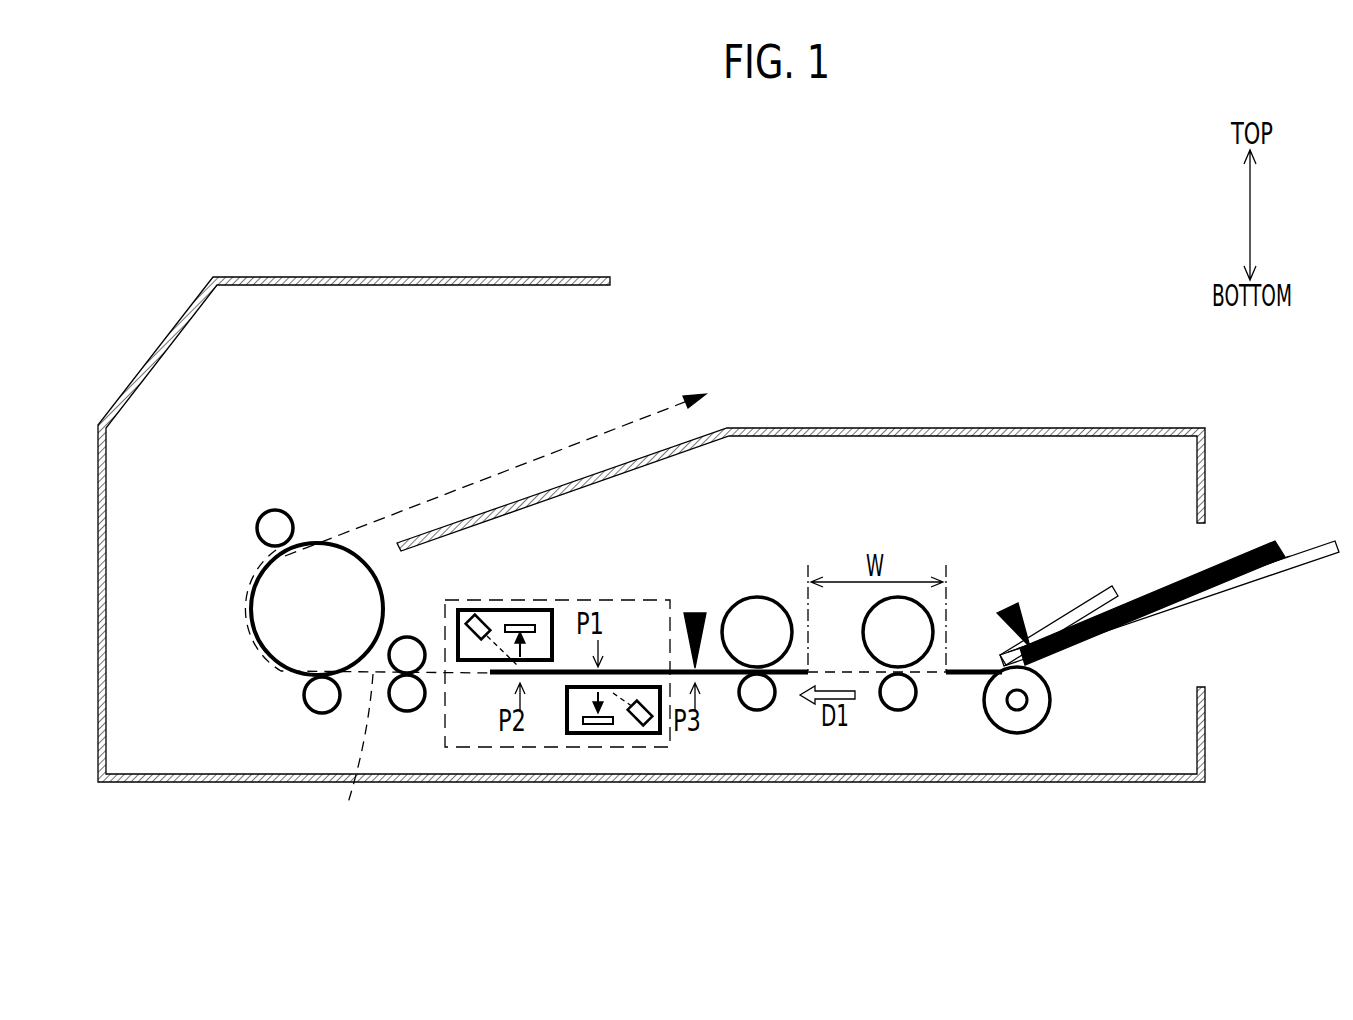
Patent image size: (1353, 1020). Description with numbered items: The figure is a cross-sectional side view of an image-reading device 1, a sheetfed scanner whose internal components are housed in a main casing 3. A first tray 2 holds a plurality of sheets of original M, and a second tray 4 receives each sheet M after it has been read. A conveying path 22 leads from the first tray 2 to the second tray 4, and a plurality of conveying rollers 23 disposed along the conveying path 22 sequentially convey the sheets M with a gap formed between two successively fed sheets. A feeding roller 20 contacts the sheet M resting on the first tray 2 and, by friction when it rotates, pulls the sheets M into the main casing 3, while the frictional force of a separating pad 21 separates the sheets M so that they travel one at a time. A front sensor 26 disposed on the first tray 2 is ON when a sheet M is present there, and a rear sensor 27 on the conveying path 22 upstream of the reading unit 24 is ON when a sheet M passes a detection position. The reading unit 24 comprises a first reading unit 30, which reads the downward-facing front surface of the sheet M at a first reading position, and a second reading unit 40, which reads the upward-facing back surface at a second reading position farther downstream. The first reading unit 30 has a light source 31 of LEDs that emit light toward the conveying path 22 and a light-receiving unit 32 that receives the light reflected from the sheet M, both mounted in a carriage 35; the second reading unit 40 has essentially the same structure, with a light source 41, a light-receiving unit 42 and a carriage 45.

The image-reading device 1 is at (1146, 181).
The first tray 2 is at (1262, 588).
The main casing 3 is at (940, 428).
The second tray 4 is at (683, 440).
The feeding roller 20 is at (1018, 725).
The separating pad 21 is at (1080, 600).
The conveying path 22 is at (350, 757).
The conveying rollers 23 is at (276, 528).
The reading unit 24 is at (590, 600).
The front sensor 26 is at (1000, 612).
The rear sensor 27 is at (697, 612).
The first reading unit 30 is at (608, 781).
The light source 31 is at (648, 733).
The light-receiving unit 32 is at (577, 733).
The carriage 35 is at (603, 733).
The second reading unit 40 is at (514, 595).
The light source 41 is at (475, 610).
The light-receiving unit 42 is at (525, 625).
The carriage 45 is at (545, 610).
The sheet of original M is at (792, 673).